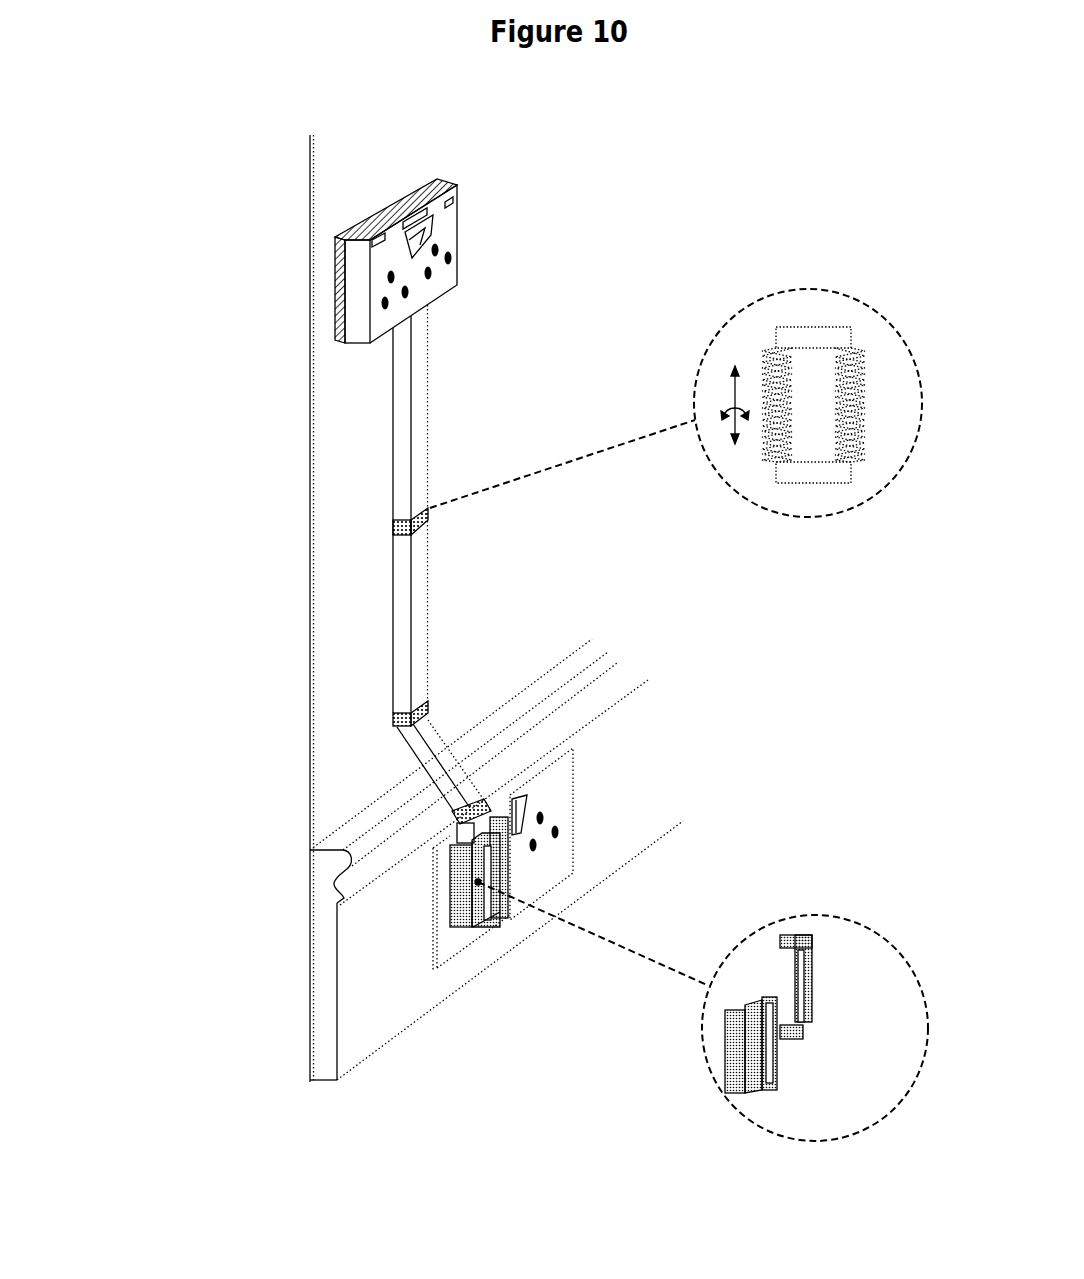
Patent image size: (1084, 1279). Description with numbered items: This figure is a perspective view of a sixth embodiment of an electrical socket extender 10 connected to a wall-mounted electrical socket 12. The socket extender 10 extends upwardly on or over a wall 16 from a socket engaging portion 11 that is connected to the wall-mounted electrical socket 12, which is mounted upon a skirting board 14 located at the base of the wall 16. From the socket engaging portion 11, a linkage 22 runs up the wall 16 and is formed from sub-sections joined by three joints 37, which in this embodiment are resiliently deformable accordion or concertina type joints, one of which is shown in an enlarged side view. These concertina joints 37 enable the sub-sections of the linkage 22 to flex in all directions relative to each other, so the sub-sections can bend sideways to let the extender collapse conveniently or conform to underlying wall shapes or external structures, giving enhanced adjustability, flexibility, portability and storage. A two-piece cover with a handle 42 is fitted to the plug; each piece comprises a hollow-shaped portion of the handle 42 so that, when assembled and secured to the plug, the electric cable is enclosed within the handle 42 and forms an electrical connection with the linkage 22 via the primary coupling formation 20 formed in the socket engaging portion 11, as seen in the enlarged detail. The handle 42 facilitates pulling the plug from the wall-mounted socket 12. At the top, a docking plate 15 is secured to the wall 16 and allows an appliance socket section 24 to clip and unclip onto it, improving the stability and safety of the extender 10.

The socket extender 10 is at (195, 413).
The socket engaging portion 11 is at (815, 915).
The wall-mounted electrical socket 12 is at (543, 863).
The skirting board 14 is at (372, 985).
The docking plate 15 is at (337, 290).
The wall 16 is at (340, 183).
The primary coupling formation 20 is at (481, 822).
The linkage 22 is at (368, 552).
The appliance socket section 24 is at (420, 290).
The joints 37 is at (393, 718).
The handle 42 is at (488, 912).